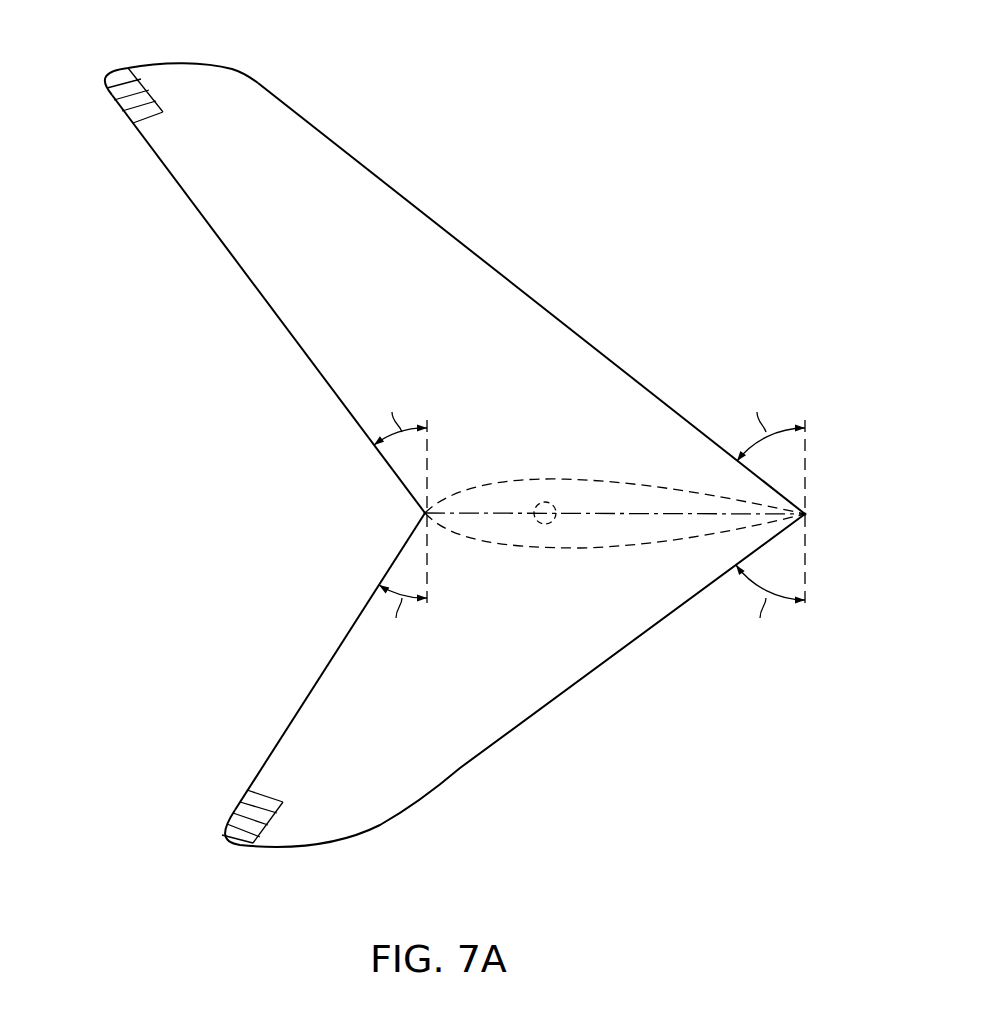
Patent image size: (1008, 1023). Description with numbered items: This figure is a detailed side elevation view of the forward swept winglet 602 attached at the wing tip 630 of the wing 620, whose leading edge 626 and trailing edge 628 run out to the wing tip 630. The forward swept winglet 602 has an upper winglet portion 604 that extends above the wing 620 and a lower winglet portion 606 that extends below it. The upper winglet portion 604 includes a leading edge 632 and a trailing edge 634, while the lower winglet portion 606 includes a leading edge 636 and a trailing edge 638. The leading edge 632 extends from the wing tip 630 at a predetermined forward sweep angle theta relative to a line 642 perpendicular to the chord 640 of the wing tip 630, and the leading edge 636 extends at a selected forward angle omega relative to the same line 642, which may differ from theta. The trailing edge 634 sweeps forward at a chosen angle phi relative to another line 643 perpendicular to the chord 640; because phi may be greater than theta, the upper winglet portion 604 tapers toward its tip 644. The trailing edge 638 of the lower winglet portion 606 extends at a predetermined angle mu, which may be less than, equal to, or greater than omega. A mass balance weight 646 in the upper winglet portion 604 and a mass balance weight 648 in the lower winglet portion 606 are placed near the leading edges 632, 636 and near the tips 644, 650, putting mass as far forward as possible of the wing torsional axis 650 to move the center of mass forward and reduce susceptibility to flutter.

The forward swept winglet 602 is at (421, 430).
The upper winglet portion 604 is at (421, 264).
The lower winglet portion 606 is at (480, 680).
The wing 620 is at (582, 482).
The leading edge 626 is at (423, 514).
The trailing edge 628 is at (808, 514).
The wing tip 630 is at (636, 520).
The leading edge 632 is at (248, 277).
The trailing edge 634 is at (600, 352).
The leading edge 636 is at (345, 640).
The trailing edge 638 is at (527, 722).
The chord 640 is at (512, 518).
The line 642 is at (430, 438).
The line 643 is at (808, 438).
The tip 644 is at (184, 63).
The mass balance weight 646 is at (115, 104).
The mass balance weight 648 is at (240, 804).
The tip 650 is at (548, 527).